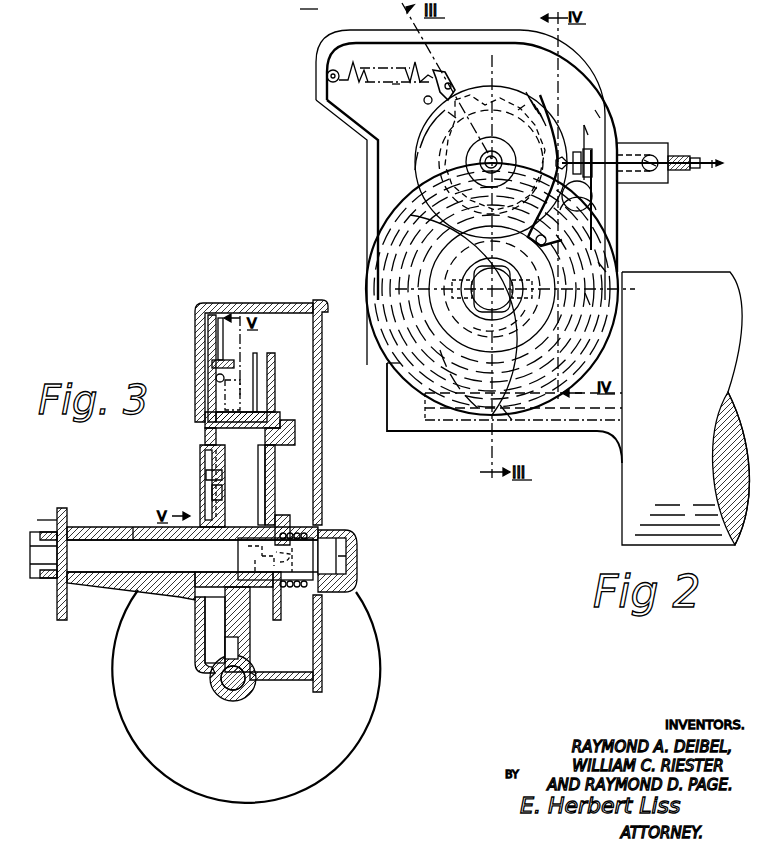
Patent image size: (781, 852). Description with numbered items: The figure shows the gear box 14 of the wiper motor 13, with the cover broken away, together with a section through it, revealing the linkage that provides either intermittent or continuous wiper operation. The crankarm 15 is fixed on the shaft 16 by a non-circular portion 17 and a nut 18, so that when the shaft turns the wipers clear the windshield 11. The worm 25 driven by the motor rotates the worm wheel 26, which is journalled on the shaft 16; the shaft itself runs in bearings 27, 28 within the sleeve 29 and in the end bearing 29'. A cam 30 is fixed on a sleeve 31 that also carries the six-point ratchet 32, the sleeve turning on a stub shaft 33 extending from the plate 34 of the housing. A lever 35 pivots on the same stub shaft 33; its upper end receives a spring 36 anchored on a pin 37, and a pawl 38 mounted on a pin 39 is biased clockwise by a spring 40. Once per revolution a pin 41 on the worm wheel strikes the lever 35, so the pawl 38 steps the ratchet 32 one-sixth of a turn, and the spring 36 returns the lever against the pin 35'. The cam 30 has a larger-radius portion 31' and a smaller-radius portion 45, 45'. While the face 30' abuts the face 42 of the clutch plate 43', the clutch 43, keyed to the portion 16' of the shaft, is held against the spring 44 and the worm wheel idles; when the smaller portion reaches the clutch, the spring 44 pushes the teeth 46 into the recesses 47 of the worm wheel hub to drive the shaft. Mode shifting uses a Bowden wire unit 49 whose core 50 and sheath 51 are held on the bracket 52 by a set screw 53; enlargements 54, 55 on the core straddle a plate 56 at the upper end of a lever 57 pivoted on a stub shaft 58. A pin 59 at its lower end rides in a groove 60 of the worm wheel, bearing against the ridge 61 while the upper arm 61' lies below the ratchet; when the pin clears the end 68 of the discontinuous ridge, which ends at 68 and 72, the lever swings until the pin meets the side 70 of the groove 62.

In FIG. 2, the windshield 11 is at (309, 6).
In FIG. 2, the wiper motor 13 is at (703, 272).
In FIG. 3, the wiper motor 13 is at (360, 725).
In FIG. 2, the gear box 14 is at (369, 178).
In FIG. 3, the gear box 14 is at (324, 456).
In FIG. 3, the crankarm 15 is at (58, 602).
In FIG. 2, the shaft 16 is at (492, 289).
In FIG. 3, the shaft 16 is at (192, 556).
In FIG. 3, the portion of shaft 16' is at (289, 604).
In FIG. 3, the non-circular portion 17 is at (48, 578).
In FIG. 3, the nut 18 is at (44, 526).
In FIG. 2, the worm 25 is at (455, 422).
In FIG. 3, the worm 25 is at (224, 702).
In FIG. 2, the worm wheel 26 is at (424, 212).
In FIG. 3, the worm wheel 26 is at (228, 618).
In FIG. 3, the bearing 27 is at (96, 582).
In FIG. 3, the bearing 28 is at (178, 585).
In FIG. 3, the sleeve 29 is at (192, 512).
In FIG. 3, the bearing 29' is at (359, 556).
In FIG. 2, the cam 30 is at (538, 155).
In FIG. 3, the cam 30 is at (289, 382).
In FIG. 2, the face of cam 30' is at (411, 131).
In FIG. 3, the face of cam 30' is at (287, 485).
In FIG. 3, the sleeve 31 is at (241, 401).
In FIG. 2, the first peripheral portion 31' is at (397, 164).
In FIG. 2, the ratchet 32 is at (450, 150).
In FIG. 3, the ratchet 32 is at (256, 400).
In FIG. 2, the stub shaft 33 is at (483, 164).
In FIG. 3, the stub shaft 33 is at (270, 422).
In FIG. 2, the plate 34 is at (585, 125).
In FIG. 3, the plate 34 is at (200, 392).
In FIG. 2, the lever 35 is at (419, 117).
In FIG. 3, the lever 35 is at (190, 373).
In FIG. 2, the pin 35' is at (376, 95).
In FIG. 2, the spring 36 is at (376, 70).
In FIG. 2, the pin 37 is at (328, 82).
In FIG. 2, the pawl 38 is at (490, 92).
In FIG. 2, the pin 39 is at (423, 100).
In FIG. 3, the pin 39 is at (225, 375).
In FIG. 2, the spring 40 is at (457, 88).
In FIG. 3, the spring 40 is at (220, 358).
In FIG. 2, the pin 41 is at (506, 289).
In FIG. 3, the pin 41 is at (206, 478).
In FIG. 3, the face of clutch plate 42 is at (262, 514).
In FIG. 2, the clutch 43 is at (492, 289).
In FIG. 3, the clutch 43 is at (331, 541).
In FIG. 3, the clutch plate 43' is at (296, 517).
In FIG. 3, the spring 44 is at (295, 530).
In FIG. 2, the second peripheral portion 45 is at (626, 200).
In FIG. 2, the second peripheral portion 45' is at (574, 116).
In FIG. 2, the teeth 46 is at (597, 112).
In FIG. 3, the teeth 46 is at (290, 557).
In FIG. 3, the recesses 47 is at (240, 548).
In FIG. 2, the Bowden wire unit 49 is at (680, 150).
In FIG. 2, the core 50 is at (712, 168).
In FIG. 2, the wound sheath 51 is at (680, 183).
In FIG. 2, the bracket 52 is at (660, 143).
In FIG. 2, the set screw 53 is at (650, 155).
In FIG. 2, the enlargement 54 is at (606, 150).
In FIG. 2, the enlargement 55 is at (566, 155).
In FIG. 2, the plate 56 is at (588, 150).
In FIG. 2, the lever 57 is at (592, 198).
In FIG. 2, the stub shaft 58 is at (595, 214).
In FIG. 2, the pin 59 is at (604, 268).
In FIG. 2, the groove 60 is at (588, 300).
In FIG. 3, the groove 60 is at (206, 462).
In FIG. 2, the ridge 61 is at (515, 322).
In FIG. 3, the ridge 61 is at (191, 496).
In FIG. 2, the upper arm of lever 61' is at (513, 99).
In FIG. 2, the groove 62 is at (530, 362).
In FIG. 3, the groove 62 is at (212, 474).
In FIG. 2, the end of ridge 68 is at (508, 420).
In FIG. 3, the side of groove 70 is at (204, 440).
In FIG. 2, the end of ridge 72 is at (460, 380).